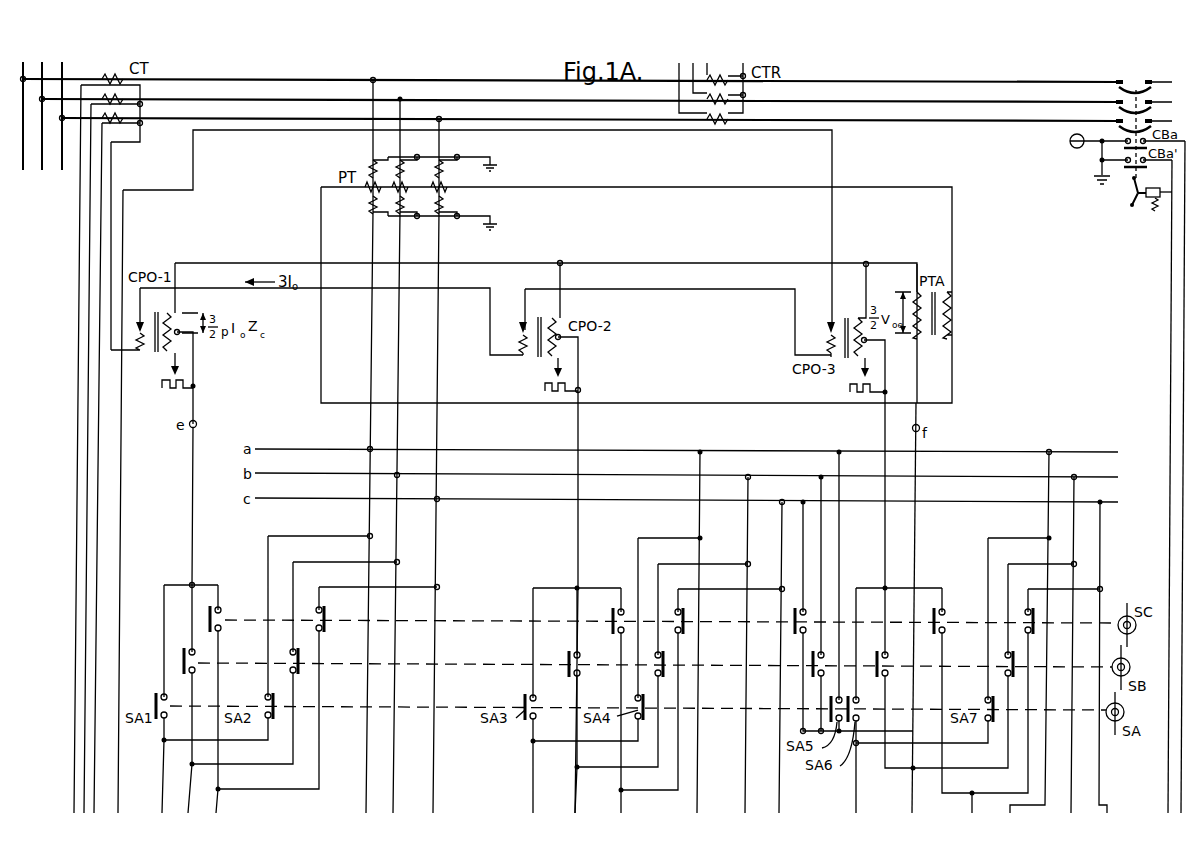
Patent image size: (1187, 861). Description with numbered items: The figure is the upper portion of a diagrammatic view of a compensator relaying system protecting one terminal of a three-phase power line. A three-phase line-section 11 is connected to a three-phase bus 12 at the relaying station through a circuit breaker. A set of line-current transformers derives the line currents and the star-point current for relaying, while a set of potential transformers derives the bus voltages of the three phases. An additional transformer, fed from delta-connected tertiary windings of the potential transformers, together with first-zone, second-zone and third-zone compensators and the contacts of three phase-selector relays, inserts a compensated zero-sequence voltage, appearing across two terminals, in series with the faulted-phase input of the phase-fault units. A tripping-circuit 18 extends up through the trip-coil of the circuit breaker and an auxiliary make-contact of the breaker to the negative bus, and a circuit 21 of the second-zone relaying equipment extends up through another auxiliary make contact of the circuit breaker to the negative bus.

The three-phase line-section 11 is at (1163, 83).
The three-phase bus 12 is at (64, 70).
The tripping-circuit 18 is at (1172, 242).
The circuit 21 is at (1186, 265).